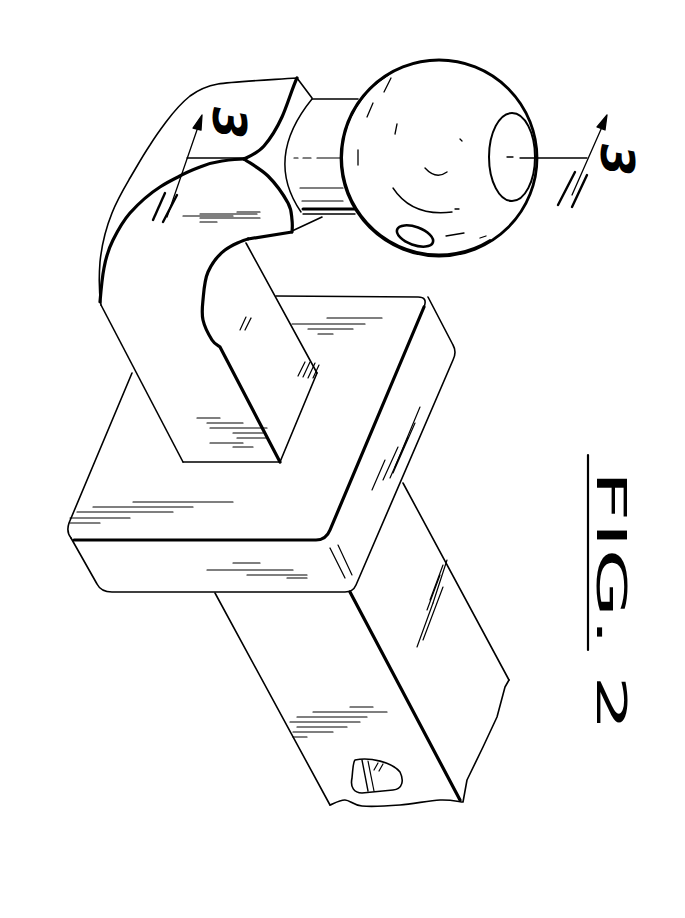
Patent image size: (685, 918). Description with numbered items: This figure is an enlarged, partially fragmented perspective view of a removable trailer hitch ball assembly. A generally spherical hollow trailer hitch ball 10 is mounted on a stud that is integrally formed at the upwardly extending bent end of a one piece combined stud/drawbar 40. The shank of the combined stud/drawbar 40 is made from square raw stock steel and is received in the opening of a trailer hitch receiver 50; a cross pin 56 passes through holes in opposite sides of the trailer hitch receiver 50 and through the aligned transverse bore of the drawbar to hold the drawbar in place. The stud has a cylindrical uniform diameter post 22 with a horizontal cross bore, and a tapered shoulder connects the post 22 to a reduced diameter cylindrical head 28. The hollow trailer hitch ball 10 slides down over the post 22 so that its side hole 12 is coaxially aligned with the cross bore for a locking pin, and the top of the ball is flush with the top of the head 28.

The hollow trailer hitch ball 10 is at (493, 242).
The hole 12 is at (420, 248).
The post 22 is at (330, 182).
The head 28 is at (515, 177).
The combined stud/drawbar 40 is at (125, 341).
The trailer hitch receiver 50 is at (455, 573).
The cross pin 56 is at (392, 784).